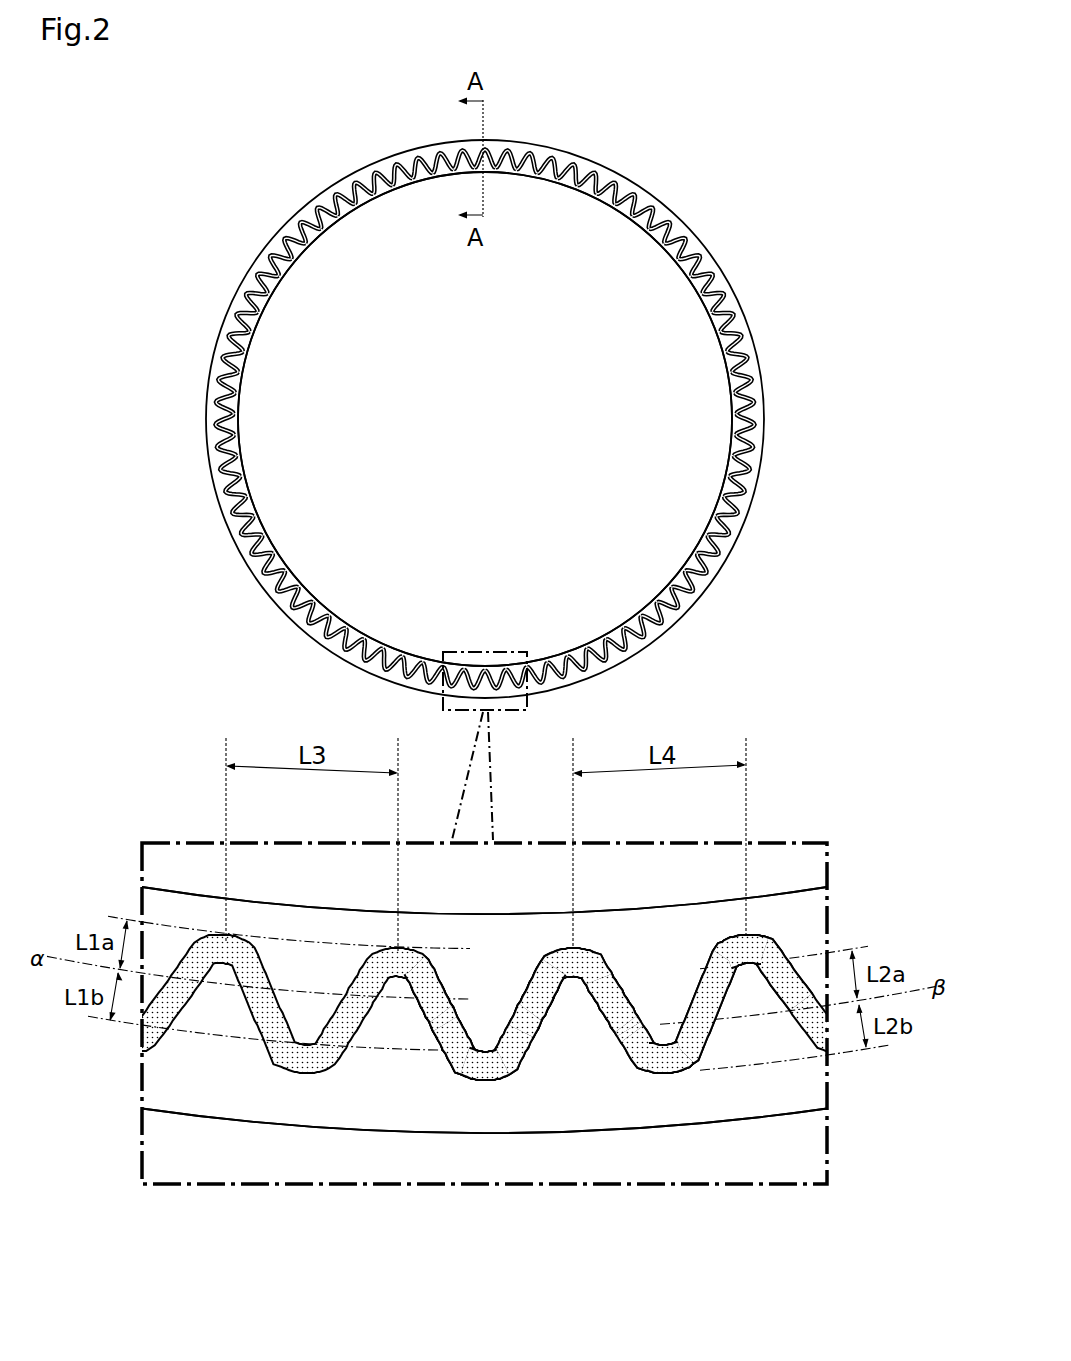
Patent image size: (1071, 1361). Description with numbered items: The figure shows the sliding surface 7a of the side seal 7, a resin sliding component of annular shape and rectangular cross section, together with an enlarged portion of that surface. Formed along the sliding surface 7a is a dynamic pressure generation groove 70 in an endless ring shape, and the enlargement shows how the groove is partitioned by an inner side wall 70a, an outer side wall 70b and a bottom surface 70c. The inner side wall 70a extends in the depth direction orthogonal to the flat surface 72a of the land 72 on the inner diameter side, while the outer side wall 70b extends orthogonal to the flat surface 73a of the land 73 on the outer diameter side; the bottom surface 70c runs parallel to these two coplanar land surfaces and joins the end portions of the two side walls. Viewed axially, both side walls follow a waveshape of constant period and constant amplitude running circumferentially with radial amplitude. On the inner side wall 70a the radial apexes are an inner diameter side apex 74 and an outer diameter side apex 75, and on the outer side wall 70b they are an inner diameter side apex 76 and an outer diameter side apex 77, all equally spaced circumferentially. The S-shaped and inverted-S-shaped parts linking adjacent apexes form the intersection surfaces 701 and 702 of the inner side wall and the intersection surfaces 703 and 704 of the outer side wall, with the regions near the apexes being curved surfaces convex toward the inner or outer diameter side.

The side seal 7 is at (649, 165).
The sliding surface 7a is at (286, 270).
The dynamic pressure generation groove 70 is at (326, 197).
The land 72 is at (172, 912).
The flat surface 72a is at (207, 920).
The land 73 is at (238, 1096).
The flat surface 73a is at (303, 1108).
The inner side wall 70a is at (628, 1262).
The outer side wall 70b is at (797, 1262).
The bottom surface 70c is at (460, 1066).
The inner diameter side apex 74 is at (615, 1035).
The outer diameter side apex 75 is at (478, 1085).
The inner diameter side apex 76 is at (746, 966).
The outer diameter side apex 77 is at (667, 1083).
The intersection surface 701 is at (533, 993).
The intersection surface 702 is at (437, 1000).
The intersection surface 703 is at (540, 1058).
The intersection surface 704 is at (428, 1057).